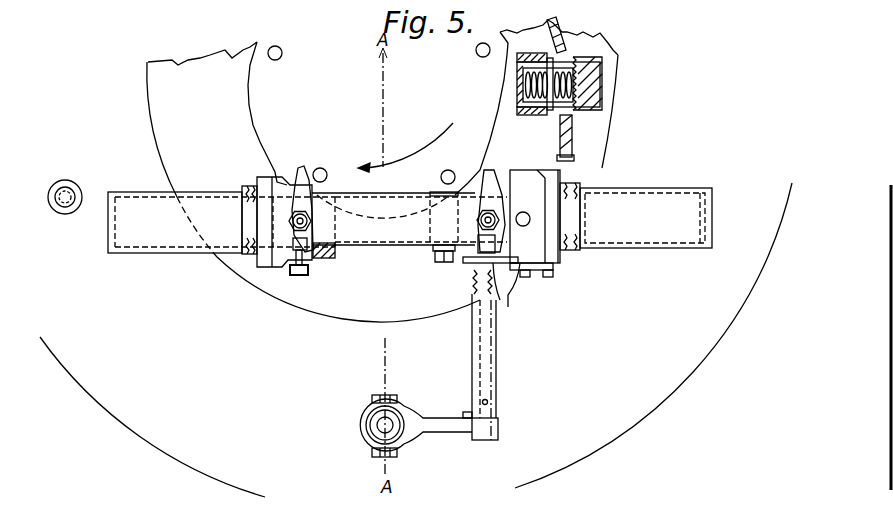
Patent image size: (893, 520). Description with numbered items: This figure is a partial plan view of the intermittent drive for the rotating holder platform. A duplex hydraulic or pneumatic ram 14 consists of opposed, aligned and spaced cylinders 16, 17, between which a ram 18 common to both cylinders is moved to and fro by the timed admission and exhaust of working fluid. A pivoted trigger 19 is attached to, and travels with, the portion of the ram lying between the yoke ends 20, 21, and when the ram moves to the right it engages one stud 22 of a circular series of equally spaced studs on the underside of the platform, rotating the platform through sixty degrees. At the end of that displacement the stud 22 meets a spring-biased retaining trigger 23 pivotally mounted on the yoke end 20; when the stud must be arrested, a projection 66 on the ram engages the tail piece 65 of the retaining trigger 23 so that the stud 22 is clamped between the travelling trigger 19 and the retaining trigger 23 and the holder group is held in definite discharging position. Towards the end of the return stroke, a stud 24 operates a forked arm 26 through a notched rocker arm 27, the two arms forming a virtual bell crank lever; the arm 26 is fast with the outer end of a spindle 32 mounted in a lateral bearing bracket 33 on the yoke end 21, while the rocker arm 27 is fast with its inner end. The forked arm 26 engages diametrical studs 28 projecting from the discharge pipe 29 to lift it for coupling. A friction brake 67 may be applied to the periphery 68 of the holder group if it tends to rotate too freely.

The duplex ram 14 is at (366, 246).
The cylinder 16 is at (221, 222).
The cylinder 17 is at (646, 218).
The ram 18 is at (409, 219).
The pivoted trigger 19 is at (492, 182).
The yoke end 20 is at (248, 258).
The yoke end 21 is at (558, 264).
The stud 22 is at (282, 53).
The retaining trigger 23 is at (302, 172).
The stud 24 is at (492, 268).
The forked arm 26 is at (438, 432).
The notched rocker arm 27 is at (466, 262).
The diametrical studs 28 is at (390, 399).
The discharge pipe 29 is at (363, 426).
The spindle 32 is at (500, 343).
The lateral bearing bracket 33 is at (537, 271).
The tail piece 65 is at (313, 262).
The projection 66 is at (480, 243).
The friction brake 67 is at (509, 89).
The periphery 68 is at (505, 43).